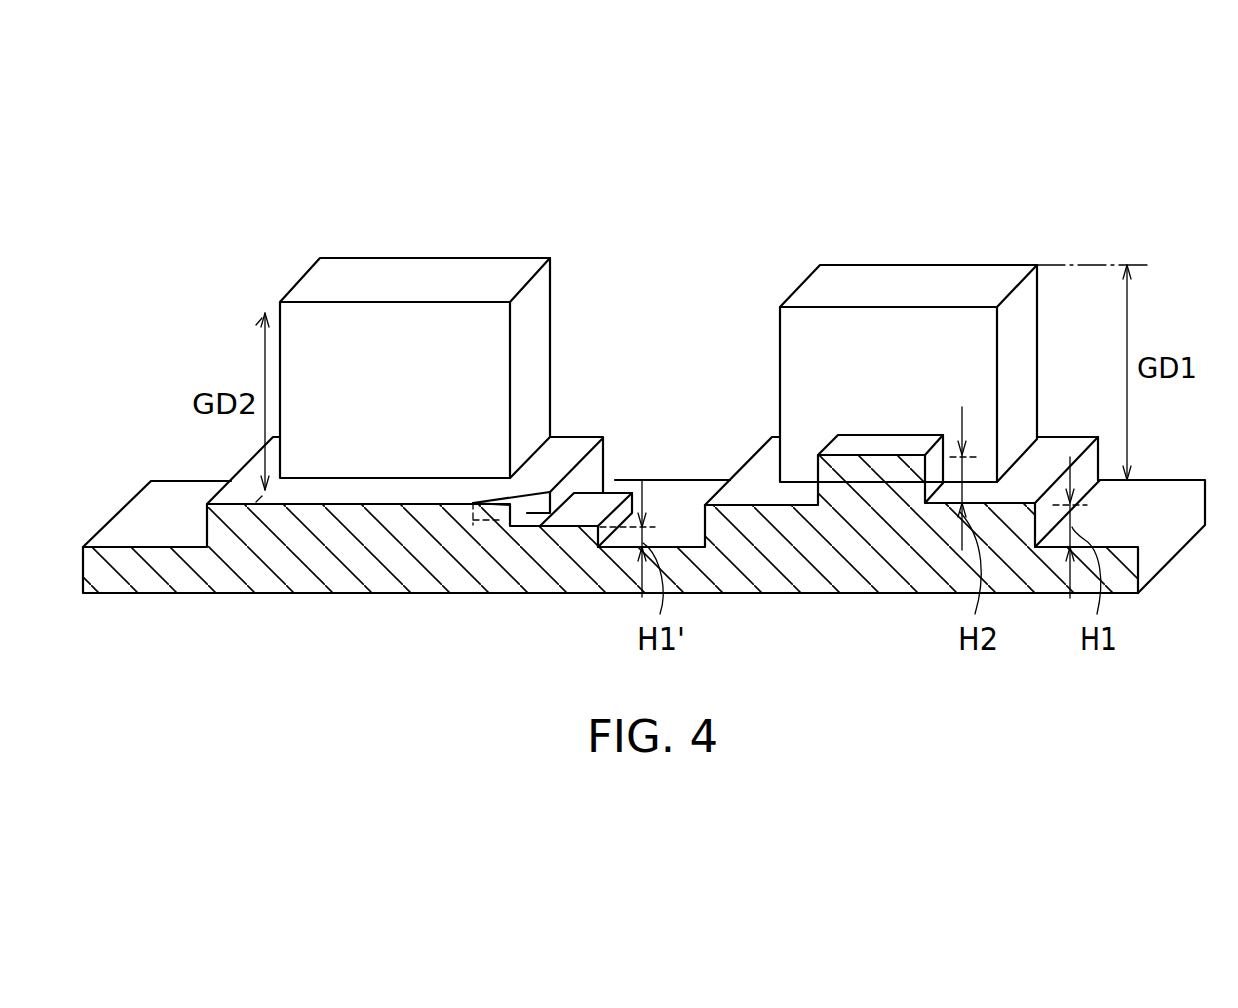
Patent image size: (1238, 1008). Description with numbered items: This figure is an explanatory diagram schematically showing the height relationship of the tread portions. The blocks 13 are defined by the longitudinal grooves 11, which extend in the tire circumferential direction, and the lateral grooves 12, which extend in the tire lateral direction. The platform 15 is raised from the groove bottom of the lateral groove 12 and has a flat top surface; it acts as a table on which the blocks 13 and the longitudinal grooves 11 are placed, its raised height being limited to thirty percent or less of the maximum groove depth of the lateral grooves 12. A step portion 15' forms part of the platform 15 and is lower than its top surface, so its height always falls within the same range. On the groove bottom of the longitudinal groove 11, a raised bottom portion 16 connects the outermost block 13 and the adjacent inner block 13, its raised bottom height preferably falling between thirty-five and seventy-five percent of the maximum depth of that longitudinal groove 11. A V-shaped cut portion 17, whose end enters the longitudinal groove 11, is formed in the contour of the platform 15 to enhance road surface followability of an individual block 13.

The longitudinal groove 11 is at (334, 494).
The lateral groove 12 is at (683, 498).
The block 13 is at (418, 270).
The platform 15 is at (652, 414).
The step portion 15' is at (594, 458).
The raised bottom portion 16 is at (867, 447).
The cut portion 17 is at (503, 508).